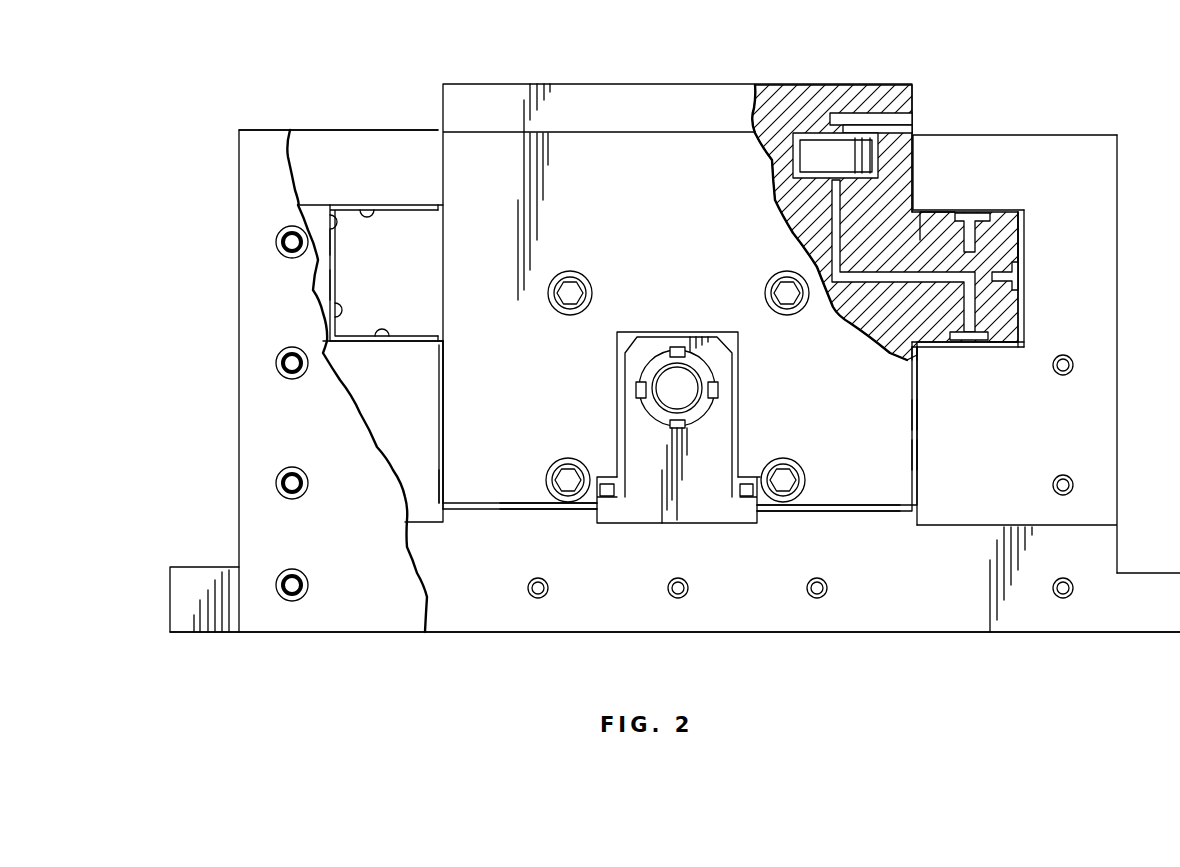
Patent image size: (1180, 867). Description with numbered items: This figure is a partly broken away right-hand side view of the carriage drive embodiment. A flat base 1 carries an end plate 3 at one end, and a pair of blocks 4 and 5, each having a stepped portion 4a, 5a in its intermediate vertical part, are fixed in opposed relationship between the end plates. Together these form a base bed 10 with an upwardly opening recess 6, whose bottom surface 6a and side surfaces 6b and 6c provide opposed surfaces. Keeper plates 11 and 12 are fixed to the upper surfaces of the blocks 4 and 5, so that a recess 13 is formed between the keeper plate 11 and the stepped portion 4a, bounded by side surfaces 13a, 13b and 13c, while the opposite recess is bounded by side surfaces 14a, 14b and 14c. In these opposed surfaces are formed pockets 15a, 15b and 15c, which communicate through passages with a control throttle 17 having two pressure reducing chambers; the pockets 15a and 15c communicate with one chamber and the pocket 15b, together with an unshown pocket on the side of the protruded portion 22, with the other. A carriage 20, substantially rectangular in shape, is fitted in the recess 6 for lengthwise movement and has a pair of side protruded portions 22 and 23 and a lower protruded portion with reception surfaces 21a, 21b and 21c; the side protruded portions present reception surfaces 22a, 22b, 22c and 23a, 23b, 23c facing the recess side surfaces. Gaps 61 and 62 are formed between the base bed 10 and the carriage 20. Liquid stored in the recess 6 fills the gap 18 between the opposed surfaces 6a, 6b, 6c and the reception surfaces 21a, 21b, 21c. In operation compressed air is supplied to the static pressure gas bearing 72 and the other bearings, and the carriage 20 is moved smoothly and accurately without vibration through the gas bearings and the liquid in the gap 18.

The flat base 1 is at (812, 627).
The base bed 10 is at (632, 634).
The end plate 3 is at (248, 432).
The block 4 is at (382, 428).
The stepped portion 4a is at (418, 415).
The keeper plate 11 is at (352, 142).
The keeper plate 12 is at (1000, 142).
The block 5 is at (1107, 392).
The stepped portion 5a is at (970, 427).
The recess 6 is at (883, 453).
The bottom surface 6a is at (478, 503).
The side surface 6b is at (442, 447).
The side surface 6c is at (910, 415).
The recess 13 is at (368, 278).
The side surface 13a is at (367, 208).
The side surface 13b is at (340, 310).
The side surface 13c is at (380, 336).
The side surface 14a is at (936, 212).
The side surface 14b is at (1018, 238).
The side surface 14c is at (1000, 347).
The pocket 15a is at (968, 216).
The pocket 15b is at (1017, 281).
The pocket 15c is at (965, 344).
The control throttle 17 is at (803, 127).
The gap 18 is at (833, 512).
The carriage 20 is at (672, 246).
The reception surface 21a is at (540, 508).
The reception surface 21b is at (440, 482).
The reception surface 21c is at (912, 485).
The protruded portion 22 is at (422, 296).
The reception surface 22a is at (413, 205).
The reception surface 22b is at (340, 242).
The reception surface 22c is at (423, 345).
The protruded portion 23 is at (925, 251).
The reception surface 23a is at (1005, 212).
The reception surface 23b is at (1017, 328).
The reception surface 23c is at (911, 365).
The gap 61 is at (330, 222).
The gap 62 is at (1023, 250).
The static pressure gas bearing 72 is at (326, 262).